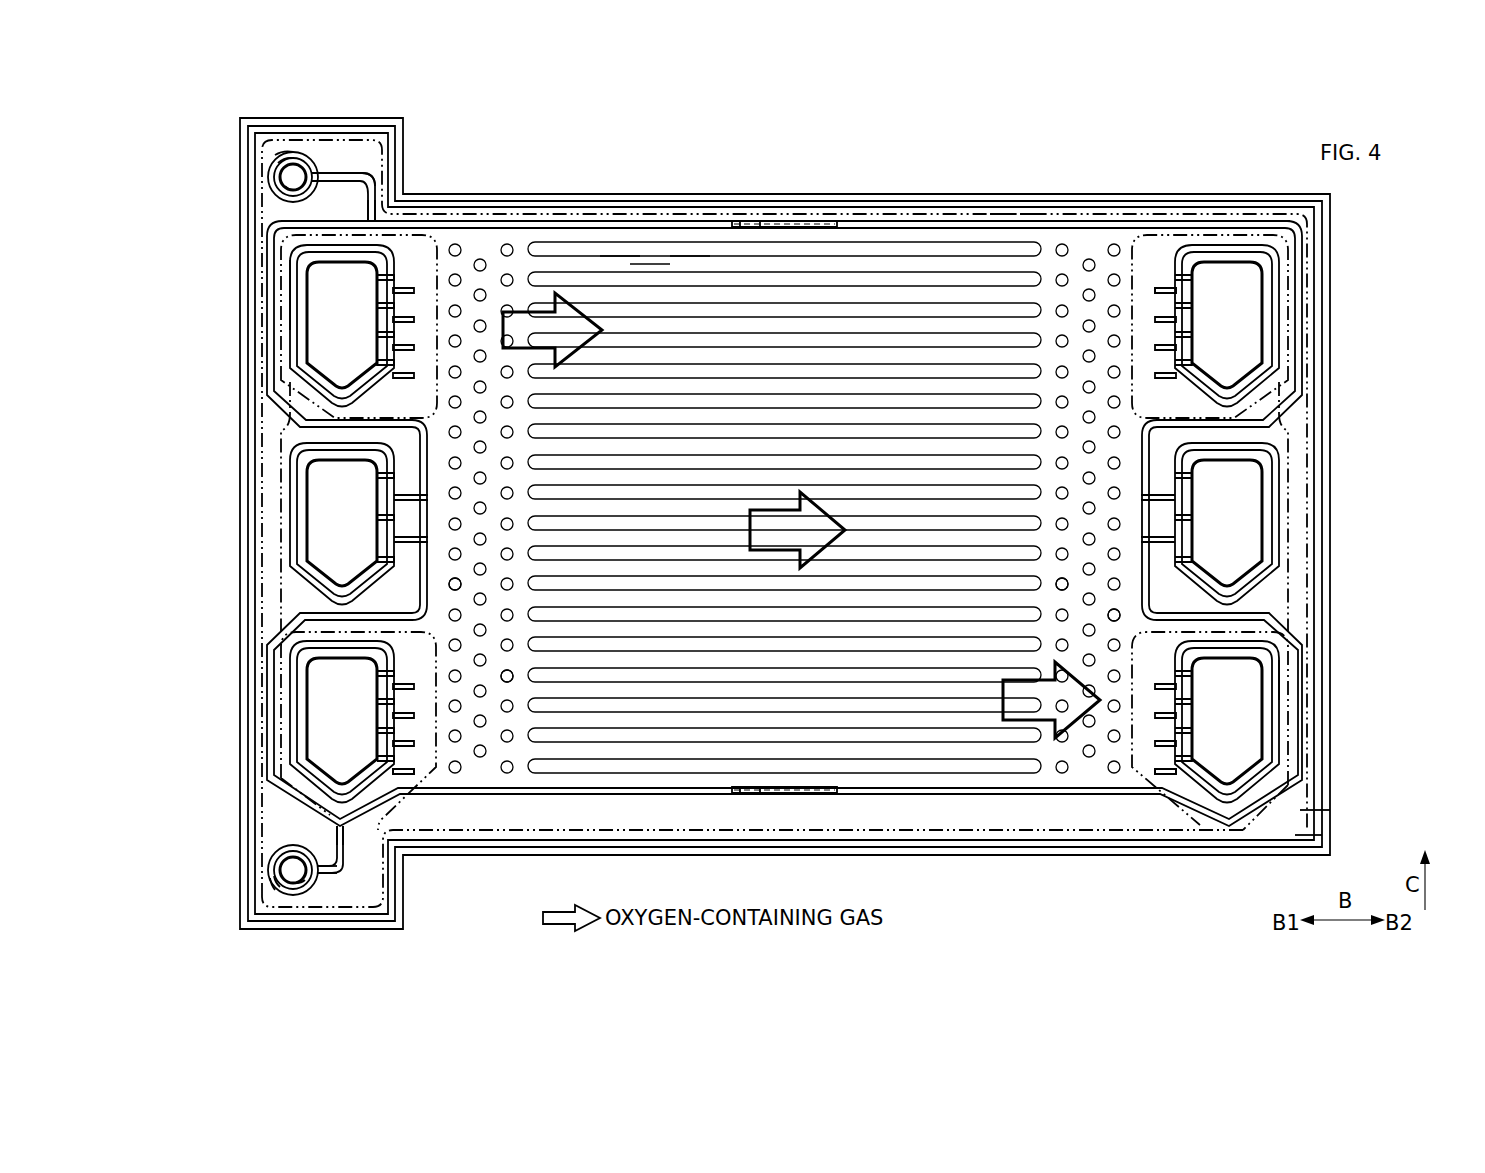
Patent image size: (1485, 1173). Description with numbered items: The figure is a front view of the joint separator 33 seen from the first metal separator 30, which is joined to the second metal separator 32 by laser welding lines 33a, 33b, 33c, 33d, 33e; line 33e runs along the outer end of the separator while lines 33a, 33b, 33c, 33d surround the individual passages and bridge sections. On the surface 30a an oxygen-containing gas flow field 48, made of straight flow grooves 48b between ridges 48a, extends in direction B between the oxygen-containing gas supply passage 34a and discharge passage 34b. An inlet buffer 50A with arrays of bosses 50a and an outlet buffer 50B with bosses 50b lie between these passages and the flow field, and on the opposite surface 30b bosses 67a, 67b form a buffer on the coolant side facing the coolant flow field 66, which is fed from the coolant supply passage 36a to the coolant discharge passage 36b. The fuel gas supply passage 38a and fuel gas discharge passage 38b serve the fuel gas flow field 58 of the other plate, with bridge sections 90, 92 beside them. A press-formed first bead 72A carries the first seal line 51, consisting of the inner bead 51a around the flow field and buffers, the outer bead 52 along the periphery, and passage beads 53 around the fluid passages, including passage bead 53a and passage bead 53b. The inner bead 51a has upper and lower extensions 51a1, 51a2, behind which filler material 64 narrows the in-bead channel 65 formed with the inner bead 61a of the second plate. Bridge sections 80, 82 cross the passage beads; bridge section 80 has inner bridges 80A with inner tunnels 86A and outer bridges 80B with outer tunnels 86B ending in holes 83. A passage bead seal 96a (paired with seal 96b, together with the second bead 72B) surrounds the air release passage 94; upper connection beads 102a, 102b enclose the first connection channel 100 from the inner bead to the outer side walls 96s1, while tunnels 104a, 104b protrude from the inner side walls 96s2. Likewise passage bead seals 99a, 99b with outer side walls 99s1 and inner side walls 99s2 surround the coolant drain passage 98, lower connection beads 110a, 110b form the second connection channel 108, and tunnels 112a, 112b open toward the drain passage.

The first metal separator 30 is at (955, 242).
The surface of the first metal separator 30a is at (1300, 810).
The surface of the first metal separator 30b is at (1295, 835).
The second metal separator 32 is at (975, 242).
The joint separator 33 is at (1268, 151).
The laser welding line 33a is at (282, 380).
The laser welding line 33b is at (282, 647).
The laser welding line 33c is at (1290, 300).
The laser welding line 33d is at (1290, 745).
The laser welding line 33e is at (1012, 214).
The oxygen-containing gas supply passage 34a is at (330, 300).
The oxygen-containing gas discharge passage 34b is at (1245, 738).
The coolant supply passage 36a is at (330, 500).
The coolant discharge passage 36b is at (1250, 500).
The fuel gas supply passage 38a is at (1240, 290).
The fuel gas discharge passage 38b is at (320, 683).
The oxygen-containing gas flow field 48 is at (808, 147).
The ridges 48a is at (825, 285).
The straight flow grooves 48b is at (892, 265).
The inlet buffer 50A is at (452, 580).
The bosses 50a is at (503, 670).
The outlet buffer 50B is at (1116, 610).
The bosses 50b is at (1066, 582).
The first seal line 51 is at (968, 843).
The inner bead 51a is at (1018, 795).
The extension 51a1 is at (922, 225).
The extension 51a2 is at (848, 795).
The outer bead 52 is at (928, 845).
The passage beads 53 is at (1292, 243).
The passage bead 53a is at (292, 293).
The passage bead 53b is at (1278, 648).
The fuel gas flow field 58 is at (620, 263).
The inner bead 61a is at (1005, 795).
The filler material 64 is at (745, 222).
The in-bead channel 65 is at (650, 262).
The coolant flow field 66 is at (688, 263).
The bosses 67a is at (482, 260).
The bosses 67b is at (1088, 260).
The first bead 72A is at (1077, 845).
The second bead 72B is at (1122, 845).
The bridge section 80 is at (378, 333).
The inner bridges 80A is at (390, 330).
The outer bridges 80B is at (405, 378).
The bridge section 82 is at (1166, 793).
The hole 83 is at (409, 380).
The inner tunnel 86A is at (385, 280).
The outer tunnel 86B is at (403, 287).
The bridge section 90 is at (1162, 278).
The bridge section 92 is at (422, 760).
The air release passage 94 is at (280, 177).
The passage bead seal 96a is at (280, 160).
The passage bead seal 96b is at (272, 166).
The outer side walls 96s1 is at (318, 176).
The inner side walls 96s2 is at (300, 190).
The coolant drain passage 98 is at (280, 870).
The passage bead seal 99a is at (283, 890).
The passage bead seal 99b is at (293, 887).
The outer side walls 99s1 is at (322, 860).
The inner side walls 99s2 is at (300, 868).
The first connection channel 100 is at (377, 168).
The upper connection bead 102a is at (378, 182).
The upper connection bead 102b is at (347, 175).
The tunnel 104a is at (365, 167).
The tunnel 104b is at (290, 184).
The second connection channel 108 is at (335, 872).
The lower connection bead 110a is at (345, 868).
The lower connection bead 110b is at (345, 850).
The tunnel 112a is at (322, 880).
The tunnel 112b is at (298, 862).